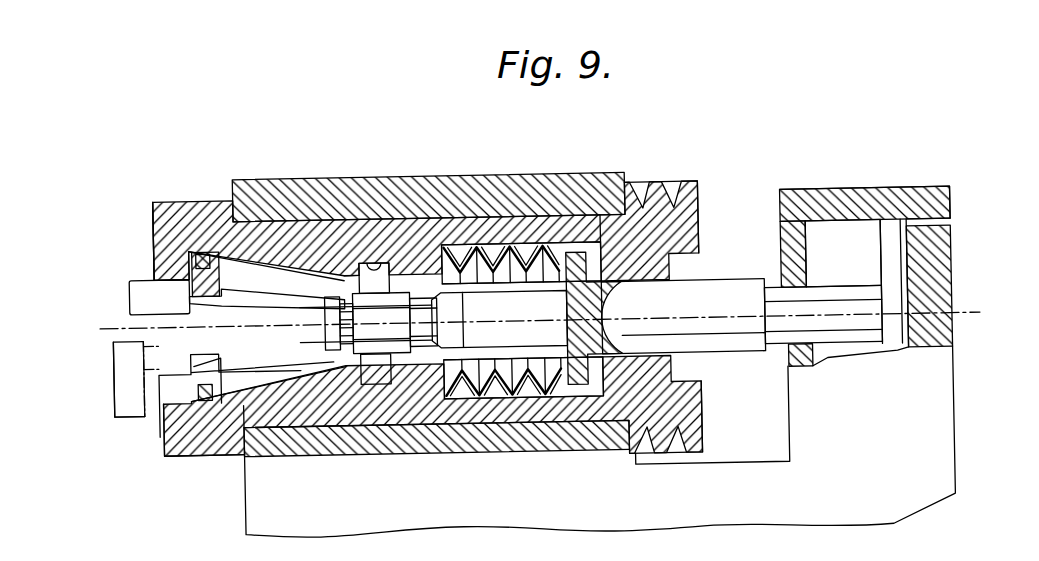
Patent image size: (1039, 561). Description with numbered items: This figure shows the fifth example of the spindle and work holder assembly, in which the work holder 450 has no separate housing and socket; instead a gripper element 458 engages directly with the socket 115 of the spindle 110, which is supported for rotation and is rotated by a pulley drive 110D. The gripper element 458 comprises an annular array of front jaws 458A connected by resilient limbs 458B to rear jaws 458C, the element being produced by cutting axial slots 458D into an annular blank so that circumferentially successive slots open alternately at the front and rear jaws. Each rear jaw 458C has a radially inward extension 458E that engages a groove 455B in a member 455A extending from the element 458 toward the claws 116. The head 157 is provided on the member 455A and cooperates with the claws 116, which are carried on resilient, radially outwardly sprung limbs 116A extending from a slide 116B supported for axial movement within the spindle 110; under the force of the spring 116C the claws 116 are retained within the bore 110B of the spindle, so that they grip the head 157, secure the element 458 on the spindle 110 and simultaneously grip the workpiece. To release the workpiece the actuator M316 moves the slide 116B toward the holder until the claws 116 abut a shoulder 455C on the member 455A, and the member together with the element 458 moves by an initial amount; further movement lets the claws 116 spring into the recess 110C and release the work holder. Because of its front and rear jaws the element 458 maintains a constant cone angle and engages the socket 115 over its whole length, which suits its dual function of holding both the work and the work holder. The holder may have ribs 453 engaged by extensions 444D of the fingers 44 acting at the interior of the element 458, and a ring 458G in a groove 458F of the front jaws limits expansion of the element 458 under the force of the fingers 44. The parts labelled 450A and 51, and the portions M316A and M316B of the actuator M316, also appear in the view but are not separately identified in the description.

The spindle 110 is at (393, 214).
The bore of the spindle 110B is at (402, 268).
The recess of the spindle 110C is at (343, 283).
The pulley drive 110D is at (663, 185).
The socket 115 is at (253, 205).
The claws 116 is at (490, 239).
The resilient radially outwardly sprung limbs 116A is at (540, 290).
The slide 116B is at (712, 313).
The spring 116C is at (508, 243).
The head 157 is at (440, 323).
The ribs 453 is at (212, 287).
The extensions of the fingers 444D is at (212, 354).
The work holder 450 is at (148, 240).
The coupling member 450A is at (127, 328).
The block 51 is at (131, 278).
The fingers 44 is at (130, 392).
The member 455A is at (487, 399).
The groove 455B is at (415, 365).
The shoulder 455C is at (543, 407).
The gripper element 458 is at (178, 205).
The front jaws 458A is at (180, 396).
The resilient limbs 458B is at (275, 372).
The rear jaws 458C is at (355, 357).
The axial slots 458D is at (290, 262).
The radially inward extension 458E is at (345, 259).
The groove of the front jaws 458F is at (208, 240).
The ring 458G is at (205, 396).
The actuator M316 is at (960, 251).
The mounting housing wall M316A is at (902, 201).
The mounting cavity M316B is at (890, 268).